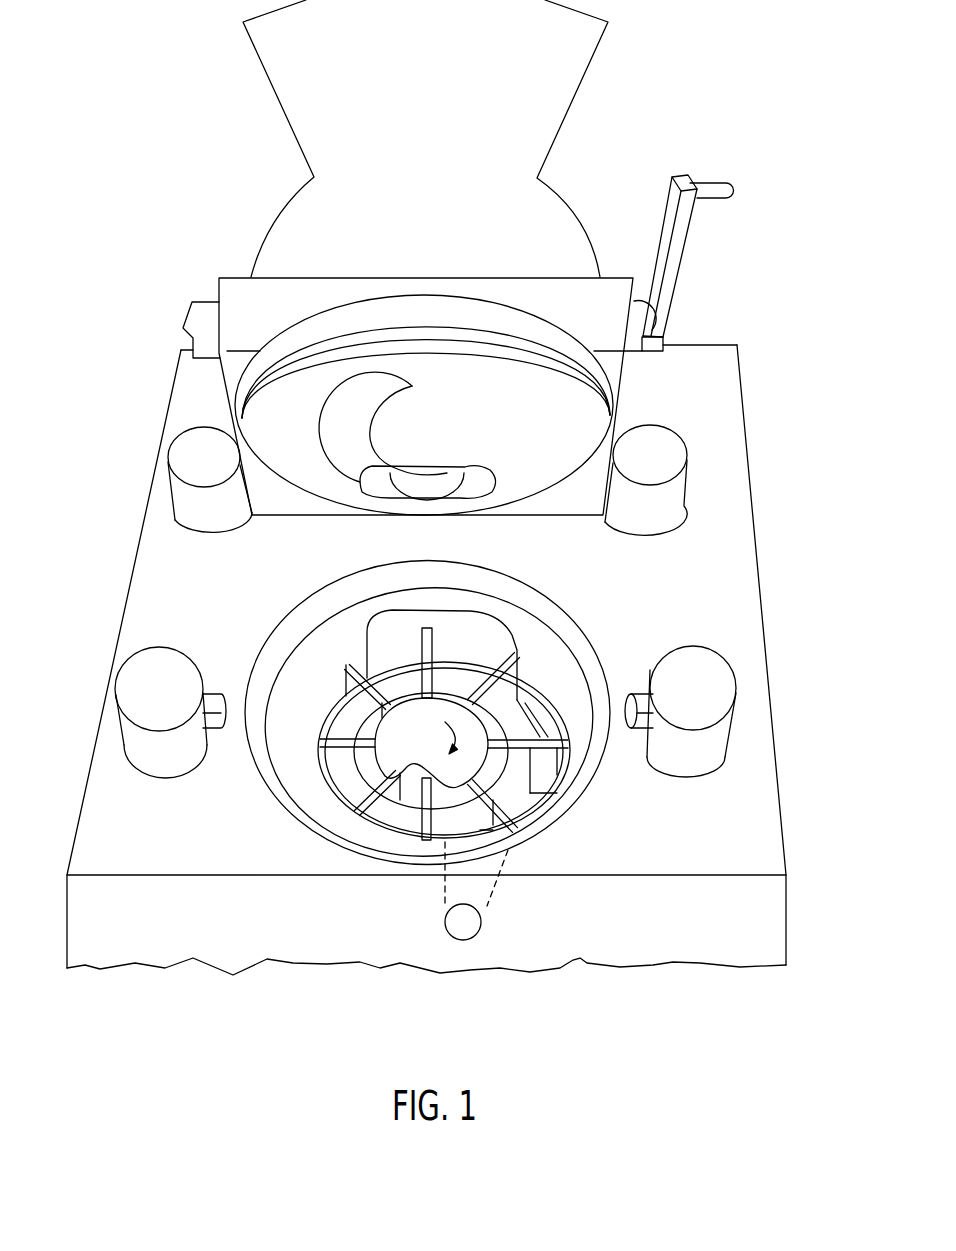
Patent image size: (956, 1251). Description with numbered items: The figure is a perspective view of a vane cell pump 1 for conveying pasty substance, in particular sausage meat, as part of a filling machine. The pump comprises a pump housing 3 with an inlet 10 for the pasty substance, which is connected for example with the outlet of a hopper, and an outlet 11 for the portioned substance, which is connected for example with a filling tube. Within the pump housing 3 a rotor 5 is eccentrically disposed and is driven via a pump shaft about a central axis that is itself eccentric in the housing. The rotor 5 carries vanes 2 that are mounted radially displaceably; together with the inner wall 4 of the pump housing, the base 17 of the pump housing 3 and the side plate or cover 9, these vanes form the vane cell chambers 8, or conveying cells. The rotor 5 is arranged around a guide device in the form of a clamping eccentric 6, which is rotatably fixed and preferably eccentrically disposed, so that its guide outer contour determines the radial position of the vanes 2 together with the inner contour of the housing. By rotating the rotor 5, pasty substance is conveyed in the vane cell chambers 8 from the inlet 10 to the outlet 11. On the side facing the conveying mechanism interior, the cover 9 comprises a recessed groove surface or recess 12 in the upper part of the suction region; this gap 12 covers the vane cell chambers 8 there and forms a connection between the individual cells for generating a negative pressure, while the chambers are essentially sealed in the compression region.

The vane cell pump 1 is at (775, 190).
The vanes 2 is at (424, 628).
The pump housing 3 is at (313, 652).
The inner wall 4 is at (318, 704).
The rotor 5 is at (510, 773).
The clamping eccentric 6 is at (434, 728).
The vane cell chambers 8 is at (547, 772).
The cover 9 is at (563, 415).
The inlet 10 is at (482, 478).
The outlet 11 is at (468, 941).
The recess 12 is at (360, 410).
The base 17 is at (533, 730).